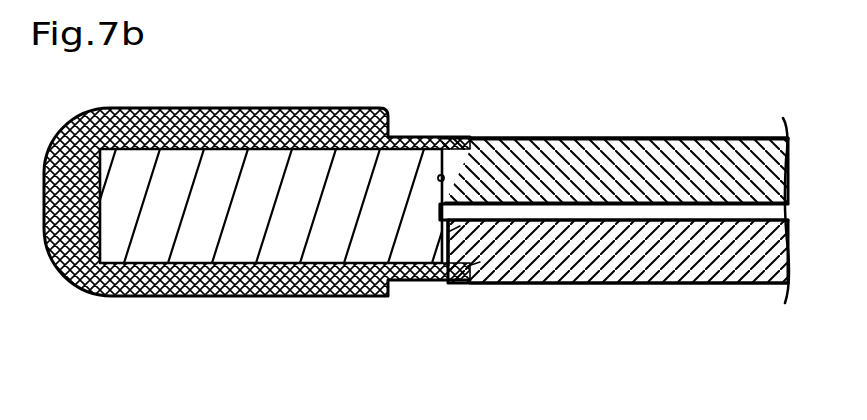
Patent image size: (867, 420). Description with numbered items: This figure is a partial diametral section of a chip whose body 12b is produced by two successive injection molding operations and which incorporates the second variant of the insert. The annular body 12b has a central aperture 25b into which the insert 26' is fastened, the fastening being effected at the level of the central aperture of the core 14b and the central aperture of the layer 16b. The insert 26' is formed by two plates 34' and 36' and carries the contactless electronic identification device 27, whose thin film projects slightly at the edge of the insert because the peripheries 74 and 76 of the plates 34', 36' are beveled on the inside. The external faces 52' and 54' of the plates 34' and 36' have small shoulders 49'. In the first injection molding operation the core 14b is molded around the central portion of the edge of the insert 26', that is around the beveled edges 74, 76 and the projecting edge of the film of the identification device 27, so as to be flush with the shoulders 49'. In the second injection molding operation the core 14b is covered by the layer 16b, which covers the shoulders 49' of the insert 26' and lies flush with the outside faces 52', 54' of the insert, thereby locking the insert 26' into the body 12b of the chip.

The body 12b is at (293, 78).
The core 14b is at (365, 170).
The layer 16b is at (195, 100).
The central aperture 25b is at (458, 233).
The insert 26' is at (615, 132).
The identification device 27 is at (680, 218).
The plate 34' is at (616, 142).
The plate 36' is at (618, 283).
The shoulders 49' is at (449, 173).
The external face 52' is at (629, 105).
The external face 54' is at (629, 326).
The periphery 74 is at (444, 177).
The periphery 76 is at (447, 232).